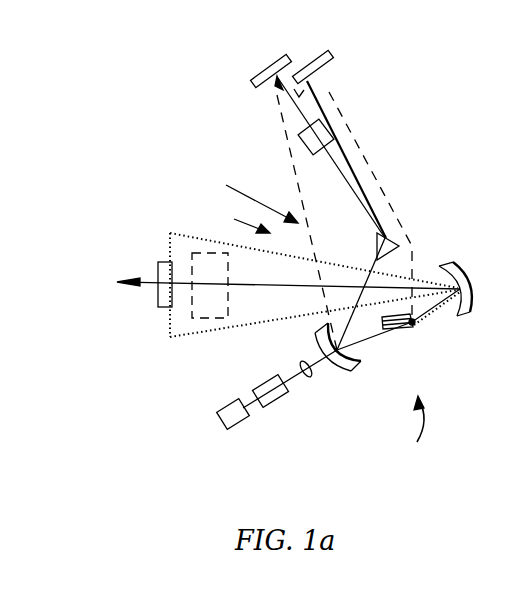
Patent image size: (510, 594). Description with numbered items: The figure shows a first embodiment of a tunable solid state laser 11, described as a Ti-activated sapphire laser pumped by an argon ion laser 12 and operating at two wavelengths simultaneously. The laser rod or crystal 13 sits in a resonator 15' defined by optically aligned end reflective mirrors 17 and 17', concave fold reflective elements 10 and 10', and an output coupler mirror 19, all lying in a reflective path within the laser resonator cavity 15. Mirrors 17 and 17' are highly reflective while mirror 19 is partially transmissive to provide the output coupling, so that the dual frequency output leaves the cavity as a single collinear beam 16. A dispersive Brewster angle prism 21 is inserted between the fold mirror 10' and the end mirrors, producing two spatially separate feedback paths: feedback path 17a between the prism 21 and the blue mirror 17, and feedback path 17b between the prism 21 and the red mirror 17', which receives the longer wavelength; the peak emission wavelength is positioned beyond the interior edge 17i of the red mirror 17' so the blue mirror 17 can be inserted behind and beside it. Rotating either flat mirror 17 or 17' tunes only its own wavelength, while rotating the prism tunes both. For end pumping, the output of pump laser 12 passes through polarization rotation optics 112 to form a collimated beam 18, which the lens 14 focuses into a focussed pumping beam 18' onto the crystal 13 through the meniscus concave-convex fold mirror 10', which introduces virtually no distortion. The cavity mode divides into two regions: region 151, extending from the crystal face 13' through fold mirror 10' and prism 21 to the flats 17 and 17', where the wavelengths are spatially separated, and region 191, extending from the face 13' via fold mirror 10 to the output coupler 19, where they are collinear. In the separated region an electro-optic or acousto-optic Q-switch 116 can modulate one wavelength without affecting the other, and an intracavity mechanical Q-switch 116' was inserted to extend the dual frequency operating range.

The concave fold reflective element 10 is at (464, 289).
The concave fold mirror 10' is at (338, 372).
The tunable solid state laser 11 is at (418, 434).
The argon ion laser 12 is at (237, 424).
The laser rod or crystal 13 is at (395, 349).
The face of laser crystal 13' is at (434, 330).
The lens 14 is at (304, 364).
The laser resonator cavity 15 is at (250, 195).
The resonator 15' is at (239, 220).
The single collinear beam 16 is at (272, 285).
The end reflective mirror 17 is at (283, 191).
The end reflective mirror 17' is at (308, 50).
The feedback path 17a is at (352, 190).
The feedback path 17b is at (363, 178).
The interior edge 17i is at (298, 94).
The collimated beam 18 is at (290, 414).
The focussed pumping beam 18' is at (398, 351).
The output coupler reflective element mirror 19 is at (160, 262).
The dispersive Brewster angle prism 21 is at (398, 233).
The polarization rotation optics 112 is at (275, 402).
The electro-optic or acousto-optic Q-switch 116 is at (287, 141).
The intracavity mechanical Q-switch 116' is at (238, 285).
The region 151 is at (335, 117).
The region 191 is at (202, 236).